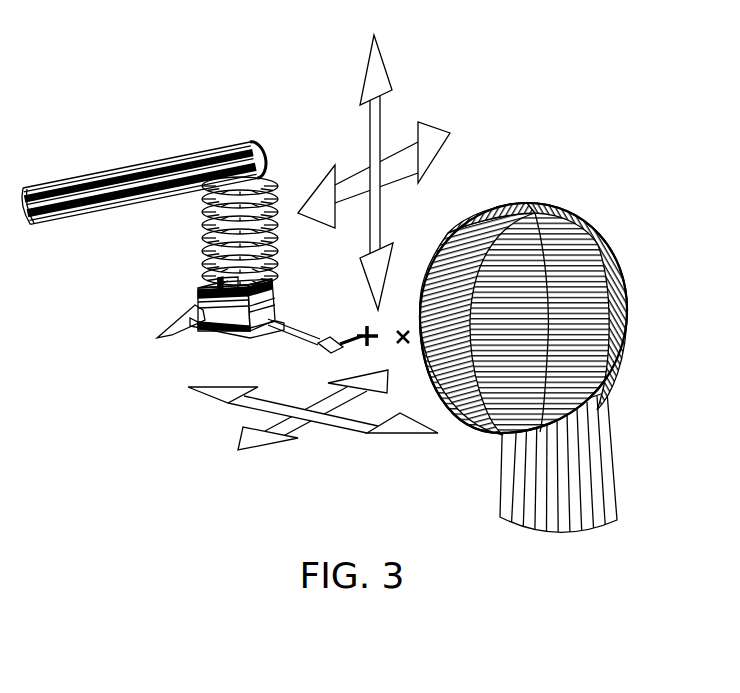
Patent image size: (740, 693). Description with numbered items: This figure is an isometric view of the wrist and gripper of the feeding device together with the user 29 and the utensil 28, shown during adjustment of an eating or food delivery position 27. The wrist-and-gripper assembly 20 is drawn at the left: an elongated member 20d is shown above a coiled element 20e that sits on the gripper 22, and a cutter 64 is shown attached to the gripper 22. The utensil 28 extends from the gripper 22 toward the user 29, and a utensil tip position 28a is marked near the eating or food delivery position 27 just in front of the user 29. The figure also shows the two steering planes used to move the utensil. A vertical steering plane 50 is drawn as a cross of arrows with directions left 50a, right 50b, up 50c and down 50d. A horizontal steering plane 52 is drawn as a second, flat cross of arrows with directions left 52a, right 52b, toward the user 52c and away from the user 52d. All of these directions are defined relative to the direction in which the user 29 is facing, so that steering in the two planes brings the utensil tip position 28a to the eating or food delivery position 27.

The handle assembly 20 is at (150, 158).
The handle rod 20d is at (133, 168).
The coil spring 20e is at (202, 223).
The gripper 22 is at (205, 318).
The cutter 64 is at (165, 318).
The utensil 28 is at (328, 338).
The utensil tip position 28a is at (362, 332).
The eating or food delivery position 27 is at (403, 345).
The user 29 is at (545, 232).
The vertical steering plane 50 is at (397, 165).
The left direction 50a is at (323, 190).
The right direction 50b is at (428, 138).
The up direction 50c is at (370, 82).
The down direction 50d is at (377, 265).
The horizontal steering plane 52 is at (268, 429).
The left direction 52a is at (257, 435).
The right direction 52b is at (365, 377).
The toward-user direction 52c is at (400, 425).
The away-from-user direction 52d is at (223, 390).